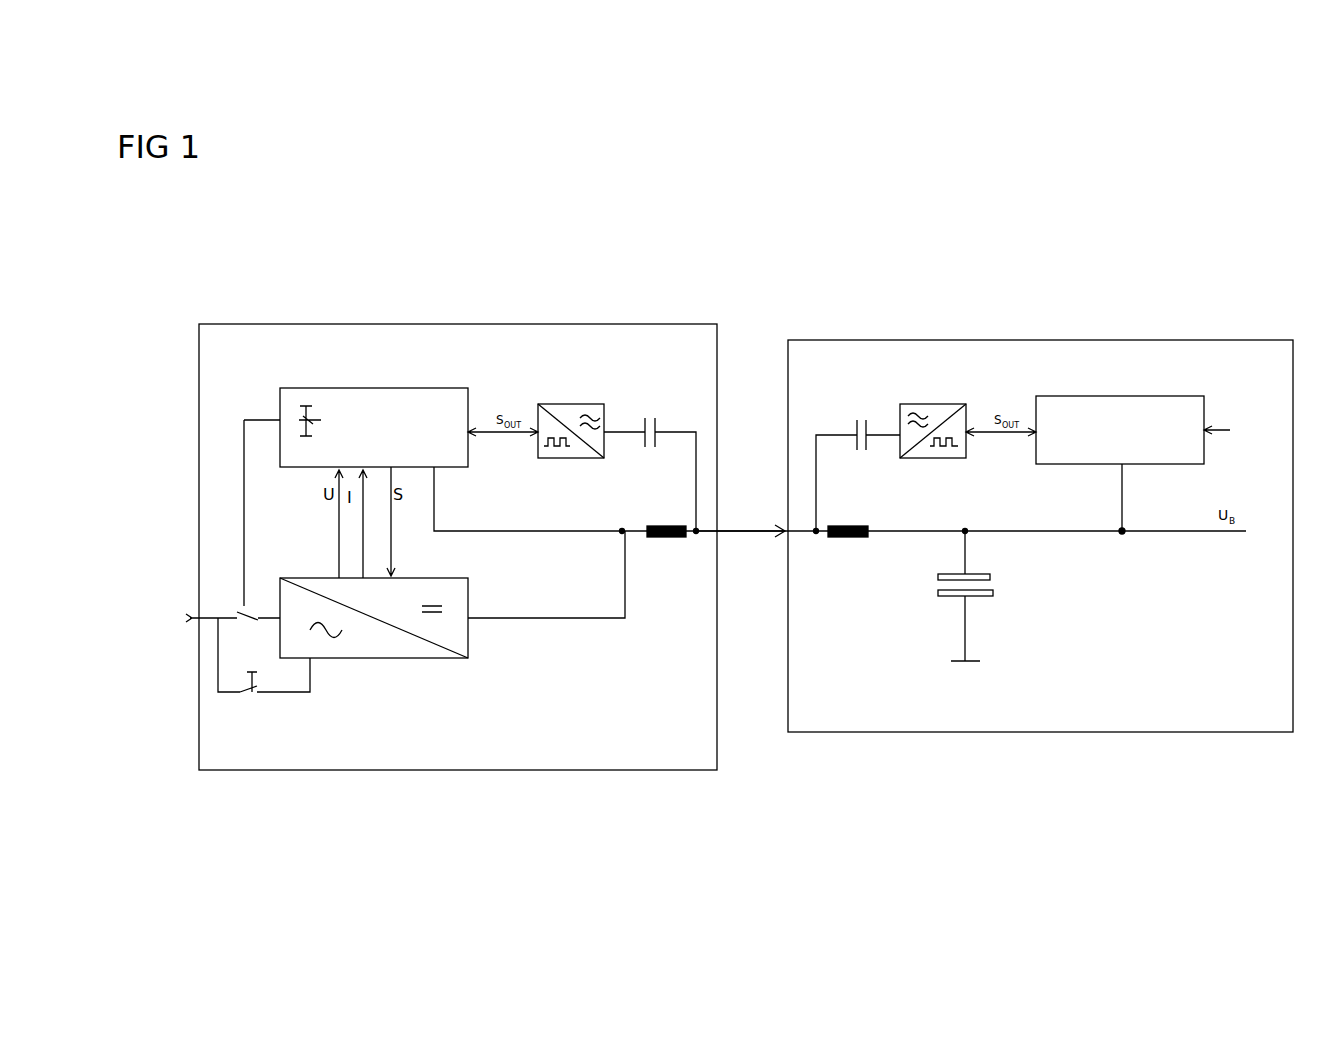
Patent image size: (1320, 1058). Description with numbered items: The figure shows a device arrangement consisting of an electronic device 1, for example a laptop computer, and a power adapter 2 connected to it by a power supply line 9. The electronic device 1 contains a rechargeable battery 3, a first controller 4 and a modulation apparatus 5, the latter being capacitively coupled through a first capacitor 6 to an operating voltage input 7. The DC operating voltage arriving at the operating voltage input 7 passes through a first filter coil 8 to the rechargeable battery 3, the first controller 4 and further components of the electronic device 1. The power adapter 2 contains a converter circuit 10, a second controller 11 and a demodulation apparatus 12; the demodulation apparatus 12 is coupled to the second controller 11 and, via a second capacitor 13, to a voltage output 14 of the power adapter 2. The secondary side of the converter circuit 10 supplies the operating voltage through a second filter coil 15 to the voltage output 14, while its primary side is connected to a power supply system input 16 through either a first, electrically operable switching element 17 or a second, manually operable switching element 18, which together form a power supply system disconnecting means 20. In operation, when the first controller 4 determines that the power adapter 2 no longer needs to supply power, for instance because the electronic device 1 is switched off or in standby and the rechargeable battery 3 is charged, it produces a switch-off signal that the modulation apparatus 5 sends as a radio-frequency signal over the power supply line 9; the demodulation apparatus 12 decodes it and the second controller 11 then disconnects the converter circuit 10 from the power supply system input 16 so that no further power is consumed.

The electronic device 1 is at (1216, 340).
The power adapter 2 is at (641, 323).
The rechargeable battery 3 is at (990, 598).
The first controller 4 is at (1128, 396).
The modulation apparatus 5 is at (936, 404).
The first capacitor 6 is at (850, 426).
The operating voltage input 7 is at (794, 542).
The first filter coil 8 is at (865, 540).
The power supply line 9 is at (745, 542).
The converter circuit 10 is at (385, 660).
The second controller 11 is at (385, 387).
The demodulation apparatus 12 is at (565, 404).
The second capacitor 13 is at (650, 404).
The voltage output 14 is at (700, 536).
The second filter coil 15 is at (637, 526).
The power supply system input 16 is at (204, 614).
The first switching element 17 is at (252, 612).
The second switching element 18 is at (268, 700).
The power supply system disconnecting means 20 is at (223, 733).